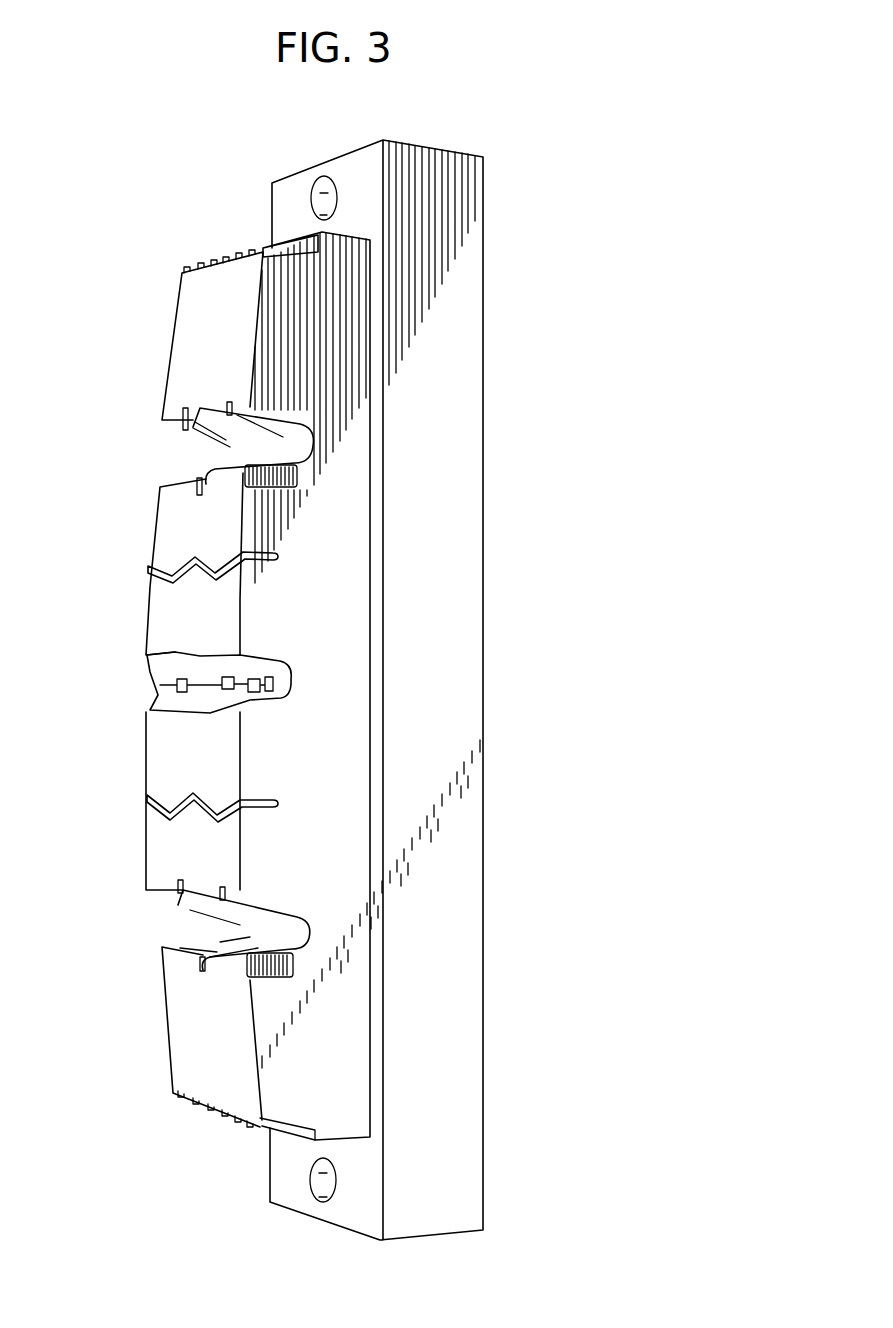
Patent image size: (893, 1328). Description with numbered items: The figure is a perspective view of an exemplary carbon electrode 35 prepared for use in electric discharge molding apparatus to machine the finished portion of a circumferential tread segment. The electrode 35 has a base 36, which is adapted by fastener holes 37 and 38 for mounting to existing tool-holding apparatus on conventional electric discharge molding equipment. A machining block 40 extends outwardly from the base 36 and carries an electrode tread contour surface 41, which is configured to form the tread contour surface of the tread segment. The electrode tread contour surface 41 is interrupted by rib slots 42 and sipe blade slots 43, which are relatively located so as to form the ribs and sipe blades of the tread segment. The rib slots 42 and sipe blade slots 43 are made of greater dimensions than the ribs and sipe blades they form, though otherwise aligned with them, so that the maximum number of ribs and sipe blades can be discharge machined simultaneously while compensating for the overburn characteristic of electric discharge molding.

The electrode 35 is at (500, 303).
The base 36 is at (455, 1046).
The fastener hole 37 is at (318, 1196).
The fastener hole 38 is at (323, 184).
The machining block 40 is at (333, 533).
The electrode tread contour surface 41 is at (183, 353).
The rib slots 42 is at (200, 460).
The sipe blade slots 43 is at (275, 558).